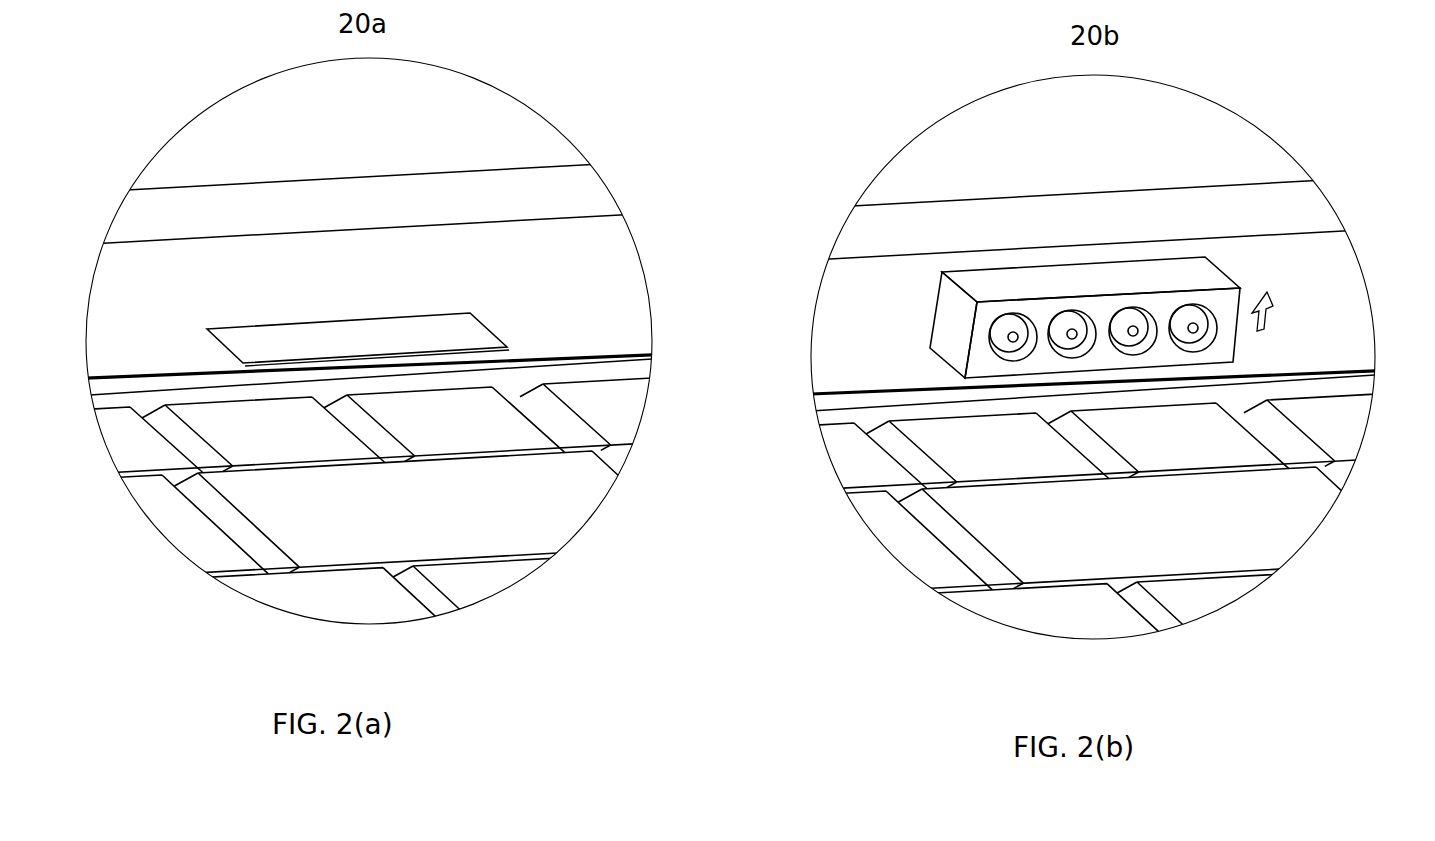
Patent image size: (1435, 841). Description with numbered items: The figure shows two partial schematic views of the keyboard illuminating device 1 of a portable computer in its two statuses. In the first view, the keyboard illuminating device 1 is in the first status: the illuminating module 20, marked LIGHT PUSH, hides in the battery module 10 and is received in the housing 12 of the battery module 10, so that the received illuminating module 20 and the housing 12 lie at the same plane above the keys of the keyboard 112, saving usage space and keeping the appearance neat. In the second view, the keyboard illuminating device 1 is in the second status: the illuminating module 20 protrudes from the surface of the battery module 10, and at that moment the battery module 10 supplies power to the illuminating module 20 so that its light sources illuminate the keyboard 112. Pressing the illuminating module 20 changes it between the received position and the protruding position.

In FIG. 2A, the keyboard illuminating device 1 is at (468, 125).
In FIG. 2B, the keyboard illuminating device 1 is at (988, 142).
In FIG. 2A, the battery module 10 is at (120, 315).
In FIG. 2B, the battery module 10 is at (1337, 317).
In FIG. 2A, the housing 12 is at (557, 254).
In FIG. 2B, the housing 12 is at (872, 285).
In FIG. 2A, the illuminating module 20 is at (468, 333).
In FIG. 2B, the illuminating module 20 is at (947, 338).
In FIG. 2A, the keyboard 112 is at (555, 522).
In FIG. 2B, the keyboard 112 is at (887, 522).